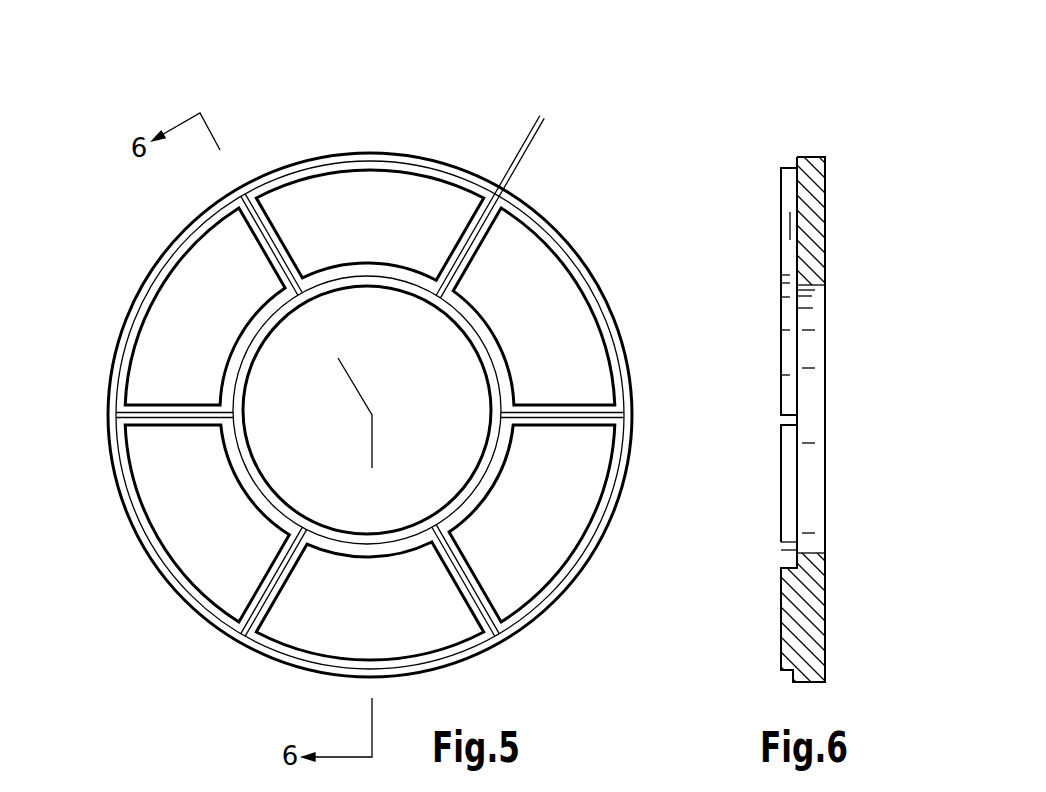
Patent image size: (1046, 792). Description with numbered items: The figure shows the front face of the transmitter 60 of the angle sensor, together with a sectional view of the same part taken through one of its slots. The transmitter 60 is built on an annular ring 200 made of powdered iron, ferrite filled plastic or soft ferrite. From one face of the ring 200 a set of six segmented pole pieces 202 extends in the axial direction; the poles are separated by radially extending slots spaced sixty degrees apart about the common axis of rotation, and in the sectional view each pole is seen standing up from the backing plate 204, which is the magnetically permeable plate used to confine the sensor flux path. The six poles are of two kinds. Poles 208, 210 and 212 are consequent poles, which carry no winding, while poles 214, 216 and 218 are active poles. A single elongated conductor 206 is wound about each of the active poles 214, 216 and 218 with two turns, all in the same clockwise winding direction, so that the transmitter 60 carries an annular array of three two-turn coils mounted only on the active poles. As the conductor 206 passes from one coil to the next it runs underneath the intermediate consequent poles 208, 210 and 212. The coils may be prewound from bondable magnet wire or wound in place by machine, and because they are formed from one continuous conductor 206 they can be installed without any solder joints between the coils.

In FIG. 5, the transmitter 60 is at (143, 207).
In FIG. 5, the segmented pole pieces 202 is at (353, 398).
In FIG. 6, the segmented pole pieces 202 is at (786, 183).
In FIG. 5, the elongated conductor 206 is at (527, 133).
In FIG. 5, the consequent pole 208 is at (557, 312).
In FIG. 5, the consequent pole 210 is at (312, 630).
In FIG. 5, the consequent pole 212 is at (150, 375).
In FIG. 5, the active pole 214 is at (553, 555).
In FIG. 5, the active pole 216 is at (187, 545).
In FIG. 5, the active pole 218 is at (380, 197).
In FIG. 6, the annular ring 200 is at (805, 356).
In FIG. 6, the backing plate 204 is at (812, 176).